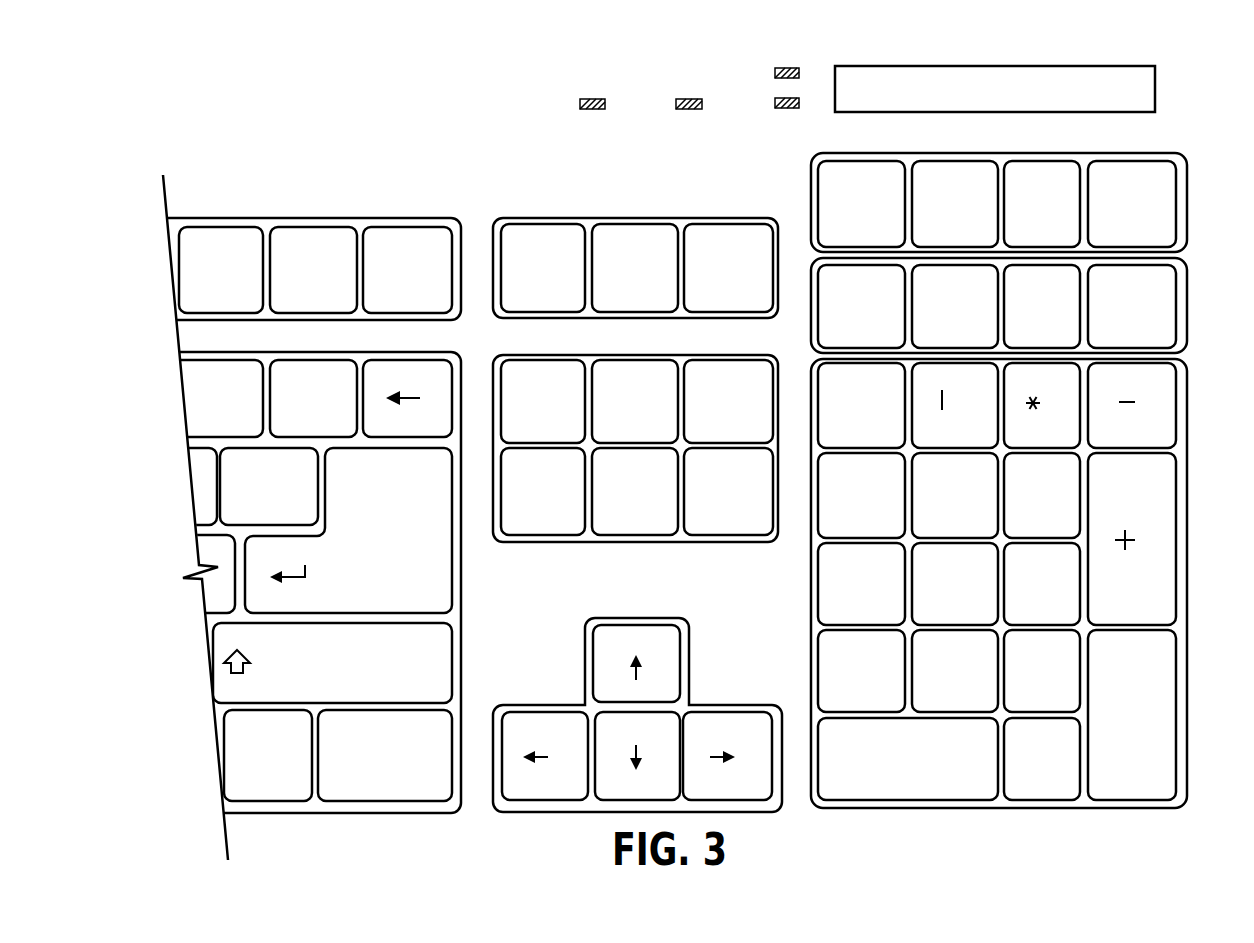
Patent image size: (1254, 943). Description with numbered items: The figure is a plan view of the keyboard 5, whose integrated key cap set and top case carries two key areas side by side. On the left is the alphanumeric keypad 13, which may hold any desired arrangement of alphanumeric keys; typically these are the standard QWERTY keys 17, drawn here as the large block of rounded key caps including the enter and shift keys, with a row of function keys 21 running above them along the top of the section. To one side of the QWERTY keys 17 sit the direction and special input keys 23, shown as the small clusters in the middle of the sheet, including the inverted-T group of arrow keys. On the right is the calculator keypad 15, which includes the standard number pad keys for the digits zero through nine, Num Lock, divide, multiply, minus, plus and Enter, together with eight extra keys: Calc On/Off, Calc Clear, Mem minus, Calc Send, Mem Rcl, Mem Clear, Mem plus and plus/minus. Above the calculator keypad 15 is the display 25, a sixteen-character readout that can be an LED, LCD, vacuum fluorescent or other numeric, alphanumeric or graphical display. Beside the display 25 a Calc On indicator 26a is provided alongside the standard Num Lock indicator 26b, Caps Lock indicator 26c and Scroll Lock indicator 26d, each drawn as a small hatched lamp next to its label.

The keyboard 5 is at (405, 170).
The alphanumeric keypad 13 is at (236, 177).
The calculator keypad 15 is at (1172, 149).
The QWERTY keys 17 is at (468, 670).
The row of function keys 21 is at (316, 212).
The direction and special input keys 23 is at (556, 553).
The display 25 is at (1005, 66).
The Calc On indicator 26a is at (799, 67).
The Num Lock indicator 26b is at (592, 110).
The Caps Lock indicator 26c is at (690, 110).
The Scroll Lock indicator 26d is at (797, 109).